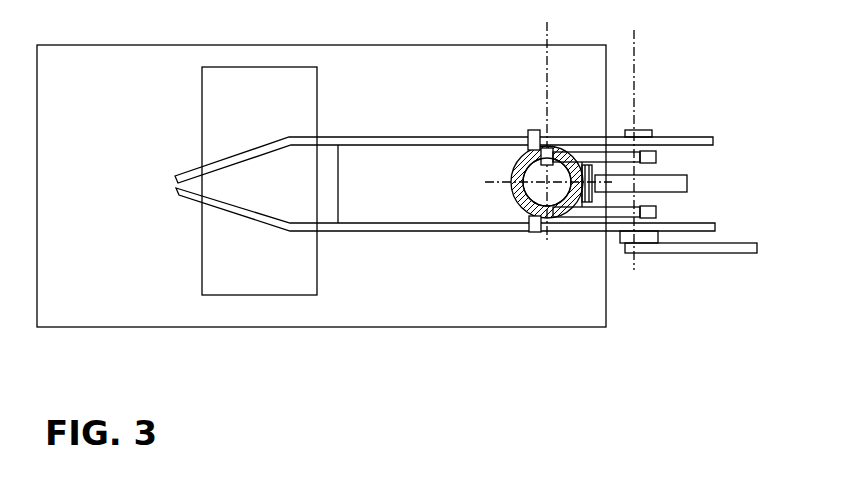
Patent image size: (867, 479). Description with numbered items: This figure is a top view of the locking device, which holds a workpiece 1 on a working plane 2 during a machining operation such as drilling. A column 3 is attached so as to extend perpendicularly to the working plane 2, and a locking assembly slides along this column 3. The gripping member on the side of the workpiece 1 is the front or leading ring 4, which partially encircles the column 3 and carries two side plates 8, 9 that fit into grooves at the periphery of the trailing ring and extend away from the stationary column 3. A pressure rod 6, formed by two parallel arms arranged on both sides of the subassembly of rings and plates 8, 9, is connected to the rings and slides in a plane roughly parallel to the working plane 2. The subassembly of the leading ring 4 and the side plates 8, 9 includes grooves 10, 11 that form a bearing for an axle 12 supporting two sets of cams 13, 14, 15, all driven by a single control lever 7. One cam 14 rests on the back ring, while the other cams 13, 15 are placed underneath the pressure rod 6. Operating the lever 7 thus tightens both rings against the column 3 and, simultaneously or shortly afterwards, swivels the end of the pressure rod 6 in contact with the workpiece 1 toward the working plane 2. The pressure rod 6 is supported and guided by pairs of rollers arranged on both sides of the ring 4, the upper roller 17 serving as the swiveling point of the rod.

The workpiece 1 is at (197, 143).
The working plane 2 is at (153, 44).
The column 3 is at (537, 194).
The front or leading ring 4 is at (511, 193).
The pressure rod 6 is at (373, 148).
The control lever 7 is at (722, 256).
The side plate 8 is at (580, 208).
The side plate 9 is at (587, 154).
The groove 10 is at (641, 212).
The groove 11 is at (641, 158).
The axle 12 is at (636, 272).
The cam 13 is at (639, 238).
The cam 14 is at (676, 183).
The cam 15 is at (650, 131).
The upper roller 17 is at (529, 135).